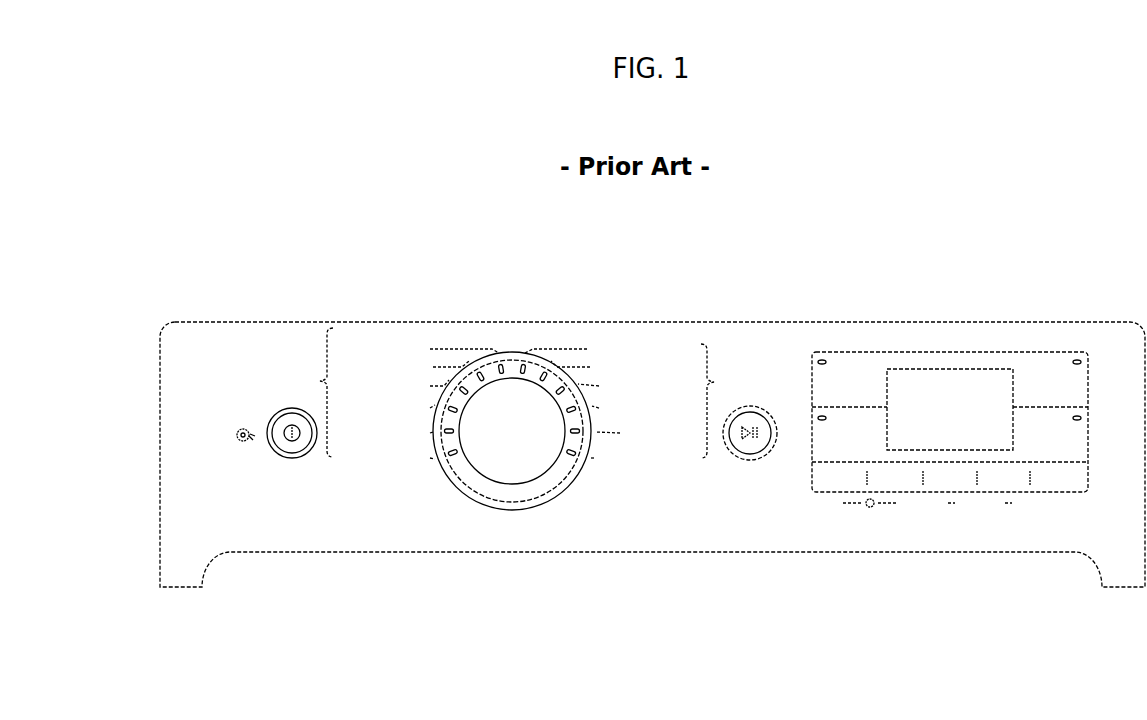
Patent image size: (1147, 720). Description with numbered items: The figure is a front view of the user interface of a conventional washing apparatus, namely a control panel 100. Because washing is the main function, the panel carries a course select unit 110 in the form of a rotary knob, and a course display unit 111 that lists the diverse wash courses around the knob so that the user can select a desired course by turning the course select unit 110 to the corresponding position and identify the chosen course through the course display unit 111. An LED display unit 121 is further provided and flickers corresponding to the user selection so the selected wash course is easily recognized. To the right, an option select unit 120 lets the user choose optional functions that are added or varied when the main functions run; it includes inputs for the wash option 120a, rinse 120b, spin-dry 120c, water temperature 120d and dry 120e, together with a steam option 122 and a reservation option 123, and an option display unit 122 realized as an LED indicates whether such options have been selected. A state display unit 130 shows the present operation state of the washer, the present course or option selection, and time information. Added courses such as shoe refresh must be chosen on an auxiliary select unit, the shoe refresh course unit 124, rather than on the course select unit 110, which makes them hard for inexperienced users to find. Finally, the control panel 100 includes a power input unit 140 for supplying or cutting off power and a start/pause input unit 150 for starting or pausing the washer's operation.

The control panel 100 is at (338, 322).
The course select unit 110 is at (512, 400).
The course display unit 111 is at (516, 395).
The option select unit 120 is at (950, 503).
The wash option 120a is at (833, 493).
The rinse option 120b is at (903, 493).
The spin-dry option 120c is at (948, 493).
The water temperature option 120d is at (1012, 493).
The dry option 120e is at (1064, 536).
The LED display unit 121 is at (572, 458).
The option display unit 122 is at (822, 359).
The reservation option 123 is at (811, 443).
The shoe refresh course unit 124 is at (1050, 372).
The state display unit 130 is at (937, 382).
The power input unit 140 is at (292, 408).
The start/pause input unit 150 is at (750, 405).